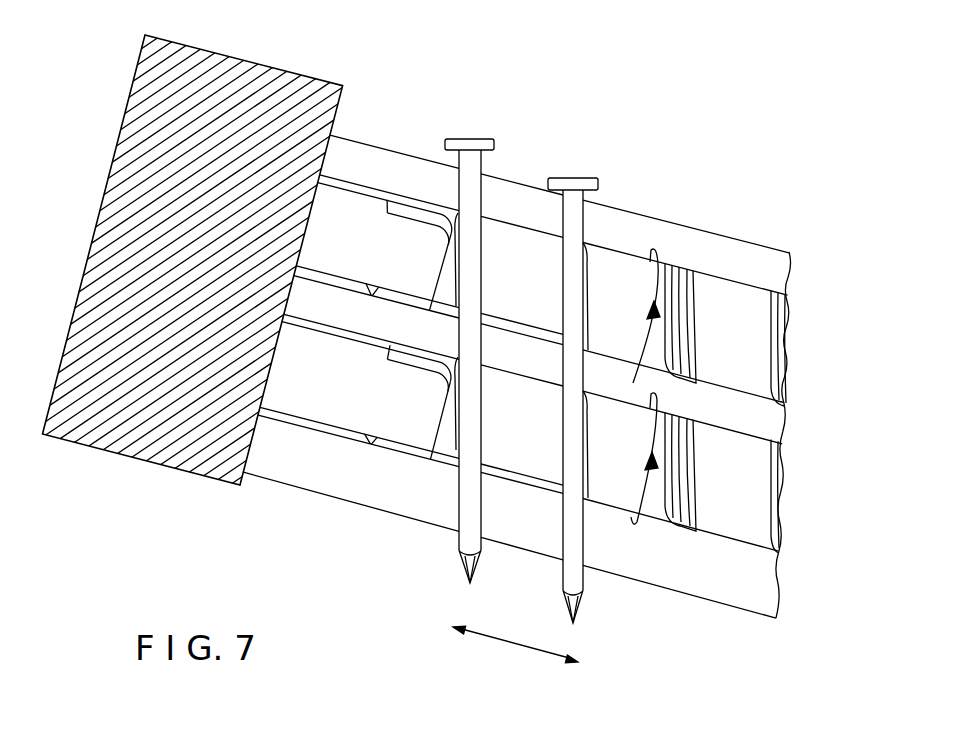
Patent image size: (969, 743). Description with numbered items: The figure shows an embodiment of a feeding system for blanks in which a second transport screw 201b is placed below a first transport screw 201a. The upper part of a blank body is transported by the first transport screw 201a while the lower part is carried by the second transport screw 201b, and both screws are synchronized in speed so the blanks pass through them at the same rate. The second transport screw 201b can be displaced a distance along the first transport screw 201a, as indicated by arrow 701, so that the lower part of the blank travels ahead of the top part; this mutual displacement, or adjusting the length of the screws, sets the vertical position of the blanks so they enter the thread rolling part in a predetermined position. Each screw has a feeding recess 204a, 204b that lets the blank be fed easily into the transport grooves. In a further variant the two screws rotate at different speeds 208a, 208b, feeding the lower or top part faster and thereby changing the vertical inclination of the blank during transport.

The first transport screw 201a is at (812, 279).
The second transport screw 201b is at (813, 606).
The feeding recess 204a is at (406, 240).
The feeding recess 204b is at (396, 418).
The rotation speed of first transport screw 208a is at (652, 248).
The rotation speed of second transport screw 208b is at (633, 524).
The arrow indicating displacement of transport screws 701 is at (512, 656).